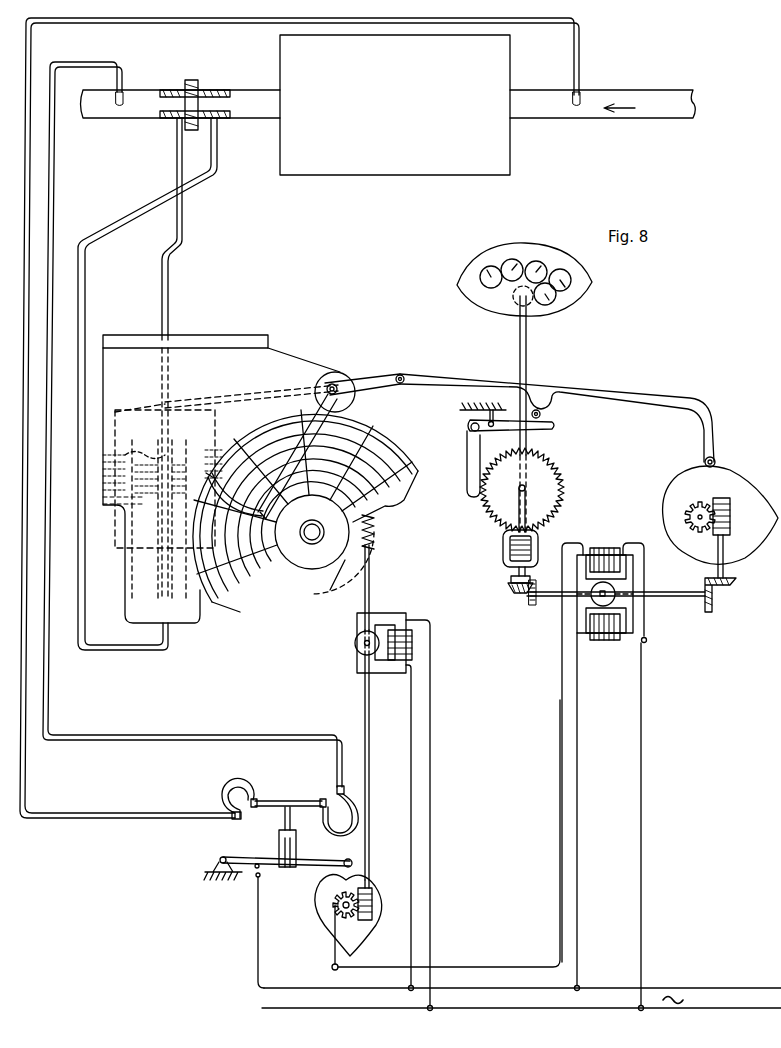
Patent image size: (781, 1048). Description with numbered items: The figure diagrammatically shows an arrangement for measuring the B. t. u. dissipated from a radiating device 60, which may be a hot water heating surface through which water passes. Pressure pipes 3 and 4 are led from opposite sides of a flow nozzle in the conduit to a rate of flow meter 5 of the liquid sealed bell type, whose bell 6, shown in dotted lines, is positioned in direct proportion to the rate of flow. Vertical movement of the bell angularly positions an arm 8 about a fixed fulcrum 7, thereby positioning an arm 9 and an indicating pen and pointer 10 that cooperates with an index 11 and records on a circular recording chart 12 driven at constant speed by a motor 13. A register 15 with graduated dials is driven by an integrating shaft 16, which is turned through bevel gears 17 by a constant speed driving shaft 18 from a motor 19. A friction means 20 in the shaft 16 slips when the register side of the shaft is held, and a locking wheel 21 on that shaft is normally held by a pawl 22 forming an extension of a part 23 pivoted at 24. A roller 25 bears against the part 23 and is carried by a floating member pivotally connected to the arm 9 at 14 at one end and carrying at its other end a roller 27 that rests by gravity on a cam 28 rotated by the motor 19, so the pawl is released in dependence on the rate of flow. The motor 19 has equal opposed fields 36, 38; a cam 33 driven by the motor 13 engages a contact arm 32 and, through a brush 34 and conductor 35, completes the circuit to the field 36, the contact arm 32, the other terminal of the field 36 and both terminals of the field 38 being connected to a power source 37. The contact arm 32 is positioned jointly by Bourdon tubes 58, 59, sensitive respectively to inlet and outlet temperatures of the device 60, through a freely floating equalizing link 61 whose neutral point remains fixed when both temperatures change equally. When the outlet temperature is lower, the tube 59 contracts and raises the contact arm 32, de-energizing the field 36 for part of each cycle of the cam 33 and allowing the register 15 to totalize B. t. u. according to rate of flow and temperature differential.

The pressure pipe 3 is at (108, 243).
The pressure pipe 4 is at (168, 253).
The rate of flow meter 5 is at (124, 528).
The bell 6 is at (118, 453).
The fulcrum 7 is at (334, 384).
The arm 8 is at (227, 396).
The arm 9 is at (367, 380).
The indicating pen and pointer 10 is at (306, 433).
The index 11 is at (236, 507).
The circular recording chart 12 is at (407, 478).
The motor 13 is at (388, 614).
The pivotal connection 14 is at (404, 376).
The register 15 is at (572, 306).
The integrating shaft 16 is at (527, 362).
The bevel gears 17 is at (523, 598).
The constant speed driving shaft 18 is at (555, 600).
The motor 19 is at (640, 614).
The friction means 20 is at (503, 560).
The locking wheel 21 is at (556, 478).
The pawl 22 is at (468, 496).
The part 23 is at (547, 428).
The pivot 24 is at (470, 428).
The roller 25 is at (542, 415).
The roller 27 is at (718, 462).
The cam 28 is at (750, 496).
The contact arm 32 is at (272, 857).
The cam 33 is at (318, 904).
The brush 34 is at (334, 940).
The conductor 35 is at (560, 703).
The field 36 is at (602, 548).
The power source 37 is at (507, 999).
The field 38 is at (600, 641).
The Bourdon tube 58 is at (221, 790).
The Bourdon tube 59 is at (355, 825).
The radiating device 60 is at (410, 176).
The equalizing link 61 is at (260, 800).